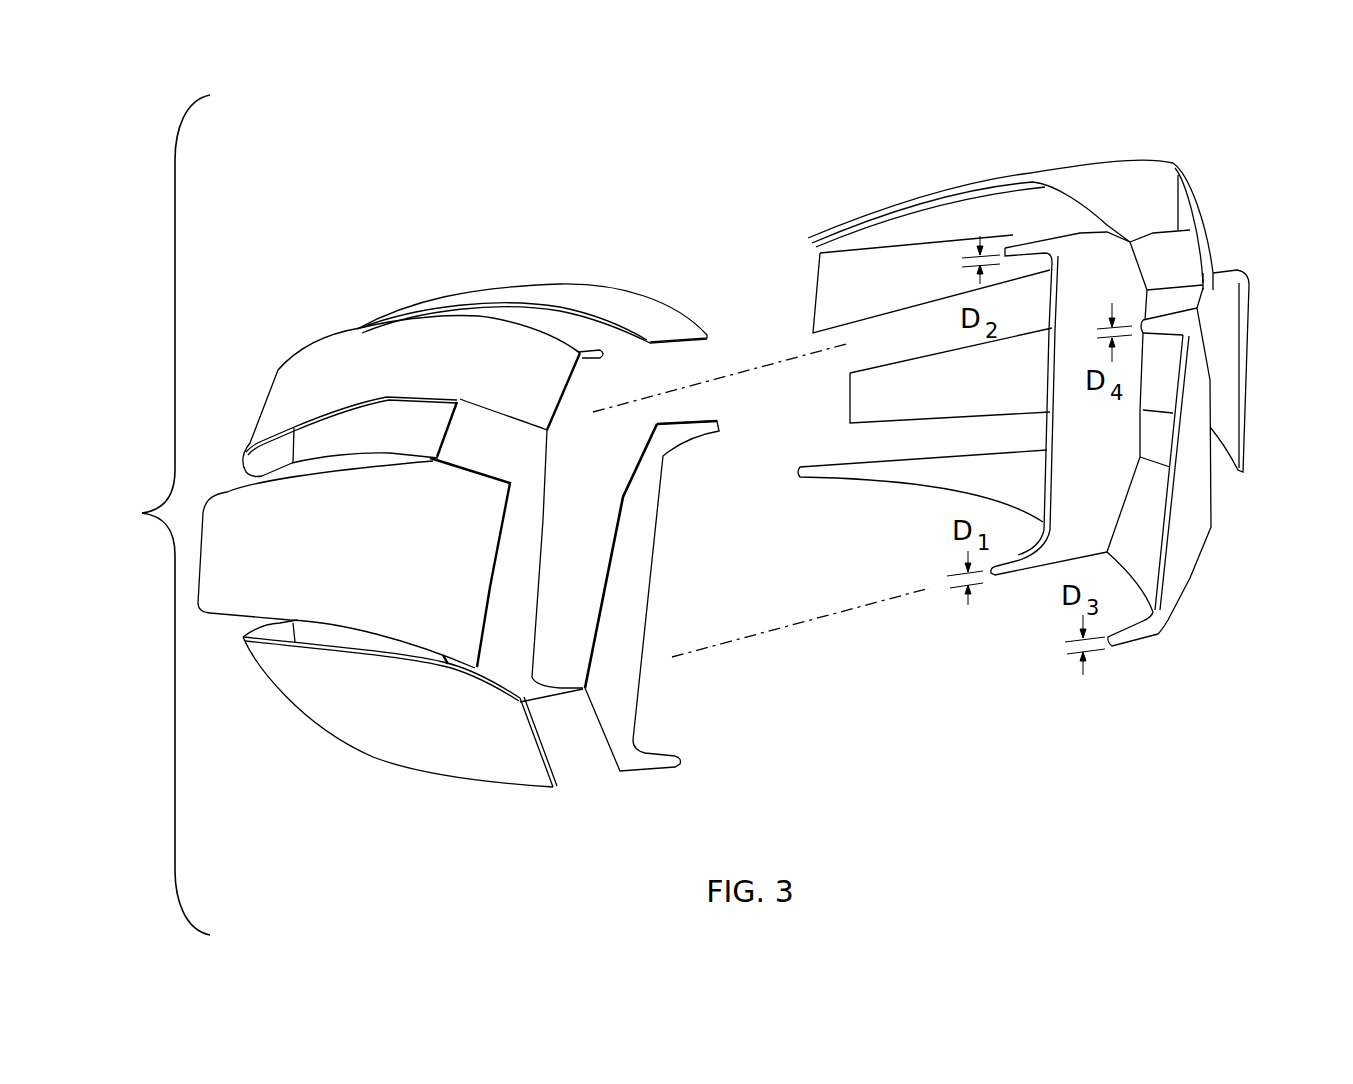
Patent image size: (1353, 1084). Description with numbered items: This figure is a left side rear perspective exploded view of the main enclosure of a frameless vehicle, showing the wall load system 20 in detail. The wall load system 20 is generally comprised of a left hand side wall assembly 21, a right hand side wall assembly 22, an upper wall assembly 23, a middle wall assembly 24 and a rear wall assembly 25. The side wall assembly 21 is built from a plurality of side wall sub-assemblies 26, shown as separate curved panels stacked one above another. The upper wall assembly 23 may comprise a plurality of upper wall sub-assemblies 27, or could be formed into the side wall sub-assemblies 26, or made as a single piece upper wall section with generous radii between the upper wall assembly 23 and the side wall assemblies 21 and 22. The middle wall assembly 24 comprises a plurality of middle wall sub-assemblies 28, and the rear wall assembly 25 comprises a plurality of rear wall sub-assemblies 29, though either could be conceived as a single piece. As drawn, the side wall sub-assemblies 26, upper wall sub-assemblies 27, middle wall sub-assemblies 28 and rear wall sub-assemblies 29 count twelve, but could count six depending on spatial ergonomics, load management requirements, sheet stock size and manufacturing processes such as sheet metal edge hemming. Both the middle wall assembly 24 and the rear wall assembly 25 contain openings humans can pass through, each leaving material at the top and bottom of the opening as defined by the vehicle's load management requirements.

The wall load system 20 is at (150, 515).
The left hand side wall assembly 21 is at (337, 760).
The right hand side wall assembly 22 is at (1280, 441).
The upper wall assembly 23 is at (1048, 172).
The middle wall assembly 24 is at (1045, 563).
The rear wall assembly 25 is at (1147, 637).
The side wall sub-assemblies 26 is at (389, 380).
The upper wall sub-assemblies 27 is at (612, 323).
The middle wall sub-assemblies 28 is at (479, 461).
The rear wall sub-assemblies 29 is at (597, 698).